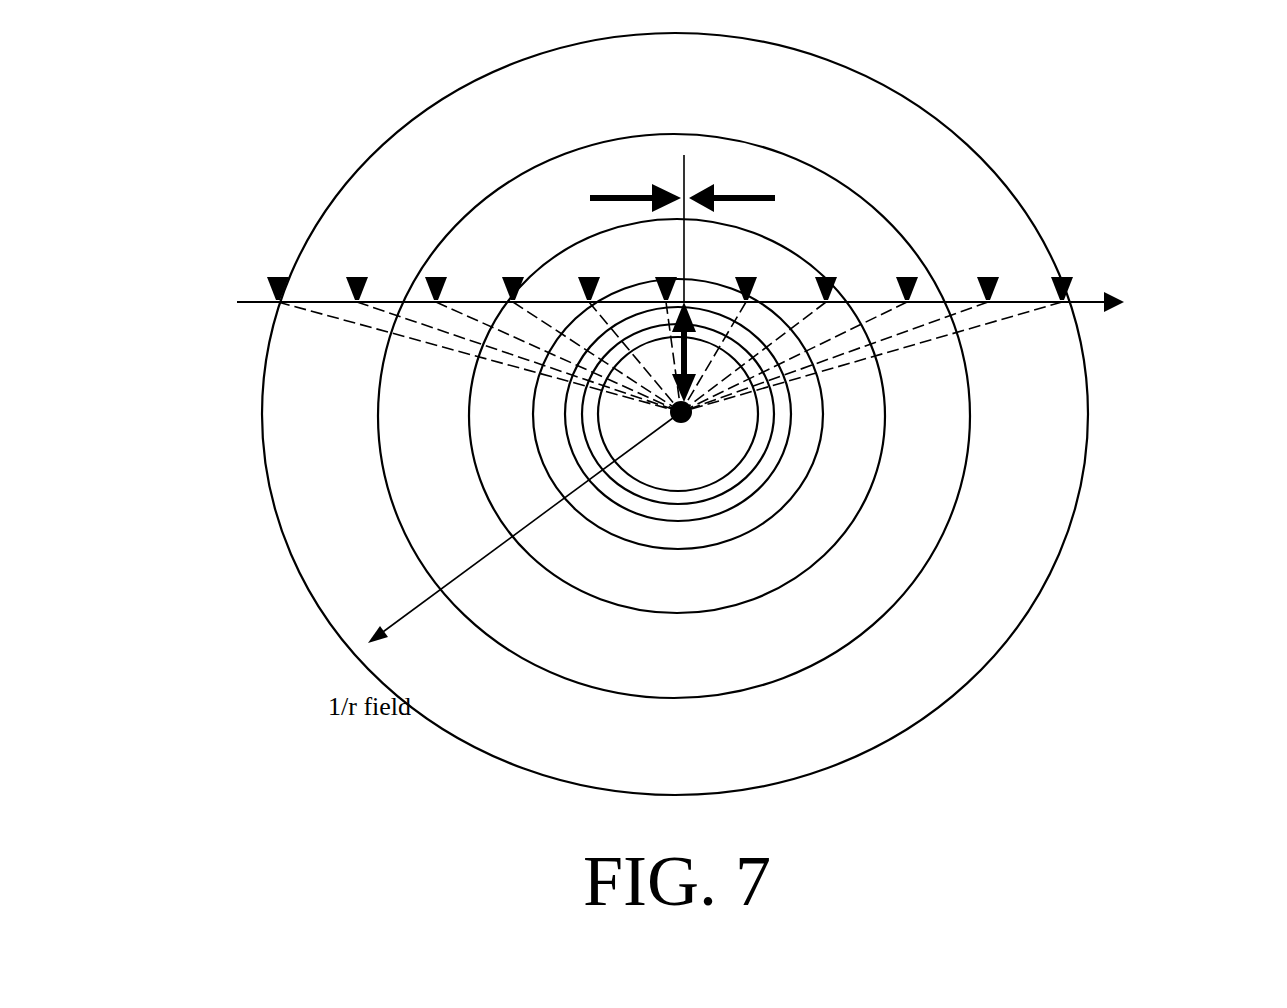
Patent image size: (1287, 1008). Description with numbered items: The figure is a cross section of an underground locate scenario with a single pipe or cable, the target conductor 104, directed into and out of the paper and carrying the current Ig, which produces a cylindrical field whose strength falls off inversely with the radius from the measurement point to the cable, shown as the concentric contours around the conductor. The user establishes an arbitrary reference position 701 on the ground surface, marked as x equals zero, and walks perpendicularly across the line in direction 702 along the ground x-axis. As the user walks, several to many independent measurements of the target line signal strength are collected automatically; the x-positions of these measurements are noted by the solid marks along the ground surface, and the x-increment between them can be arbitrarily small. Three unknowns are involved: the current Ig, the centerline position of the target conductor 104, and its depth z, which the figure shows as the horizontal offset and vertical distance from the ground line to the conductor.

The arbitrary reference position 701 is at (228, 248).
The direction 702 is at (1103, 325).
The target conductor 104 is at (648, 415).